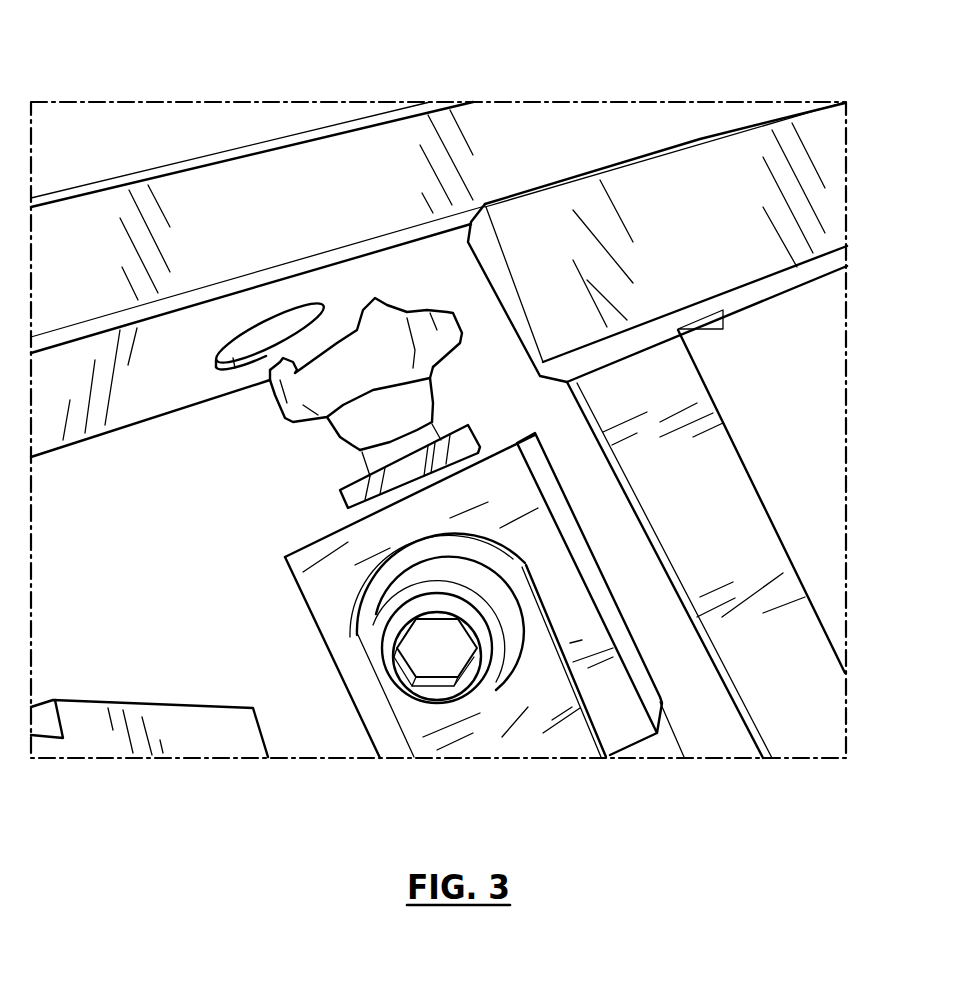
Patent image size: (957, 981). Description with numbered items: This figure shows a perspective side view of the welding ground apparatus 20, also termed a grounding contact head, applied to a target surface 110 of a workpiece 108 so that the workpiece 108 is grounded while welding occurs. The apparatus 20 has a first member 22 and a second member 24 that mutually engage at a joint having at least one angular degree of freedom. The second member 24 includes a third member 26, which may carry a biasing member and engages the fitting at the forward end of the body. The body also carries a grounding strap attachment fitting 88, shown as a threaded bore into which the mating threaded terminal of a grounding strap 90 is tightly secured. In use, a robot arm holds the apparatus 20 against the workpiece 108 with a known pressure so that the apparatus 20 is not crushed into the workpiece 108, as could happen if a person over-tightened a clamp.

The welding ground apparatus 20 is at (303, 479).
The first member 22 is at (594, 361).
The second member 24 is at (679, 544).
The third member 26 is at (717, 594).
The grounding strap attachment fitting 88 is at (397, 675).
The grounding strap 90 is at (420, 733).
The workpiece 108 is at (500, 152).
The target surface 110 is at (404, 156).